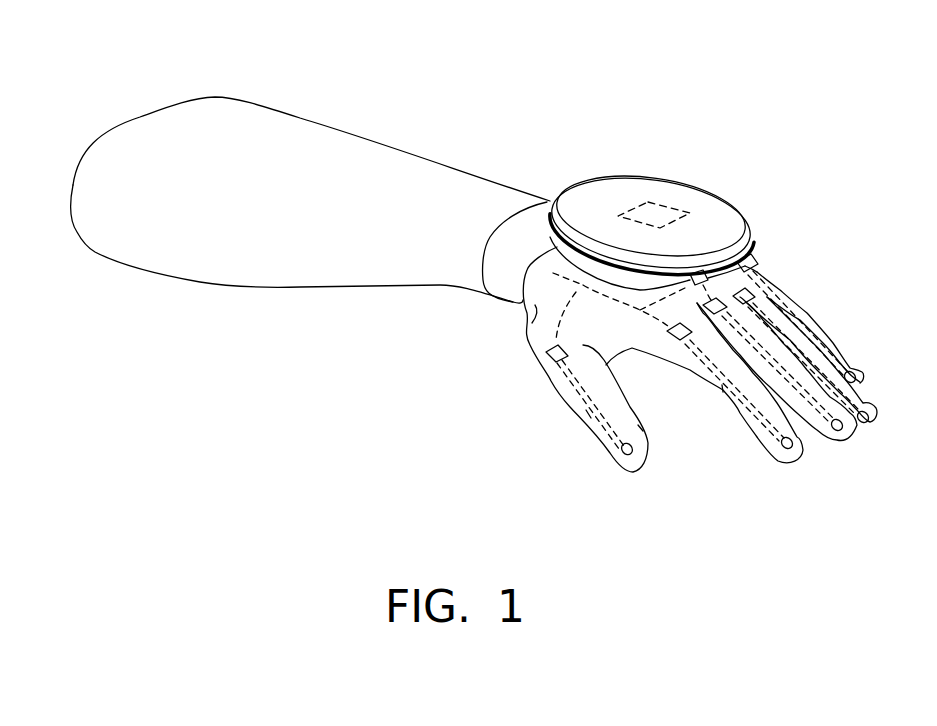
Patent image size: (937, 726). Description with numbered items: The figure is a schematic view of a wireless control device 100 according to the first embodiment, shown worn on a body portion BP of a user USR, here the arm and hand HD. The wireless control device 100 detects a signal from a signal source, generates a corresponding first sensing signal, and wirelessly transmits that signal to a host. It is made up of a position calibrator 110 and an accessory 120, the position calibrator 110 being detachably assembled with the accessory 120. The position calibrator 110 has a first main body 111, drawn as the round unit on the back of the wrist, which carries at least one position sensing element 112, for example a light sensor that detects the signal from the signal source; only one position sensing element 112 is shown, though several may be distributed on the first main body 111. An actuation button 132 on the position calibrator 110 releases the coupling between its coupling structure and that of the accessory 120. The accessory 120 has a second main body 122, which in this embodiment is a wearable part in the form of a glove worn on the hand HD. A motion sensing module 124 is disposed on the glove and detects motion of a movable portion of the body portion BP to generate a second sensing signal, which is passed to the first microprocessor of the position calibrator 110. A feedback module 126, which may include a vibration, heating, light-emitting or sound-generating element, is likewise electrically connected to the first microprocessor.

The wireless control device 100 is at (292, 46).
The position calibrator 110 is at (702, 175).
The first main body 111 is at (703, 212).
The position sensing element 112 is at (654, 203).
The accessory 120 is at (706, 458).
The second main body 122 is at (530, 323).
The motion sensing module 124 is at (592, 413).
The feedback module 126 is at (634, 455).
The actuation button 132 is at (752, 261).
The user USR is at (166, 130).
The body portion BP is at (310, 173).
The hand HD is at (479, 304).